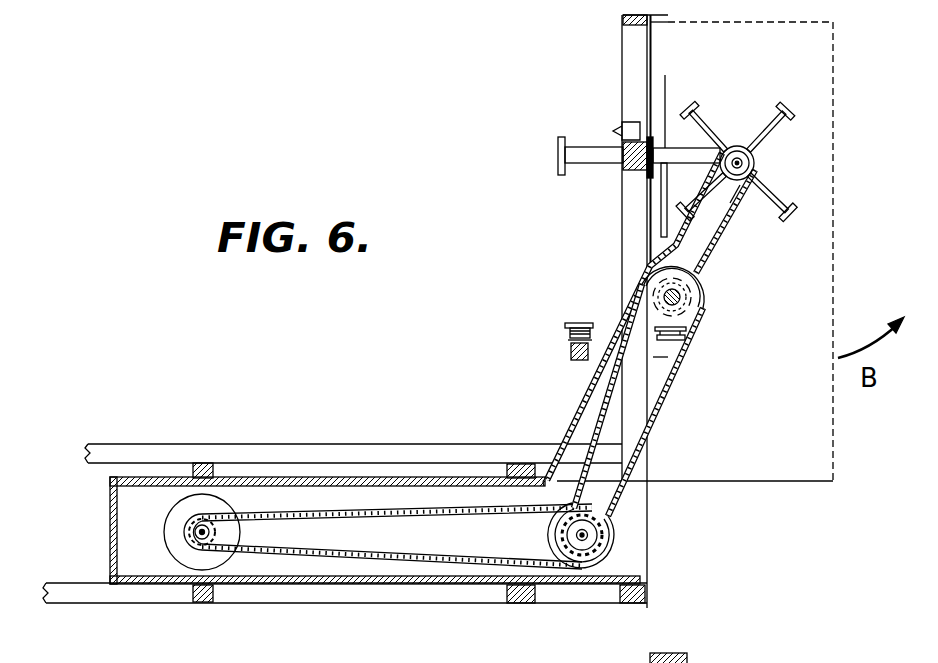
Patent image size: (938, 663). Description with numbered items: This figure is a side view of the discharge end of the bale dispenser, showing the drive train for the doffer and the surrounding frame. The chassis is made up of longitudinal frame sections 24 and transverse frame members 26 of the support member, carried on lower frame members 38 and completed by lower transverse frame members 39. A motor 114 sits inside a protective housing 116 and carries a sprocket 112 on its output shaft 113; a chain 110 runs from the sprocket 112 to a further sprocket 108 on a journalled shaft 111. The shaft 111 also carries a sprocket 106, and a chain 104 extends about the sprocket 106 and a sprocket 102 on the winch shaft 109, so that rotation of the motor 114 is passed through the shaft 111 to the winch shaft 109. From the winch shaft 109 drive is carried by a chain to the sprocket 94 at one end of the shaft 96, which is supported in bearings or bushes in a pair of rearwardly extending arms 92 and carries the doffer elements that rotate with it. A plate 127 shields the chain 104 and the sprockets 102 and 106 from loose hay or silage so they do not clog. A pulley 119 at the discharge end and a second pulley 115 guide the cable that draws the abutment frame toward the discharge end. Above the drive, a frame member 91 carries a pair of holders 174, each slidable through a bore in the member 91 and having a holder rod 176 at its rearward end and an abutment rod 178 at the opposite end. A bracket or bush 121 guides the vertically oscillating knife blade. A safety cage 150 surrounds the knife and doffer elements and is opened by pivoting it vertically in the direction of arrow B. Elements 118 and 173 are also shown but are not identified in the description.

The longitudinal frame sections 24 is at (113, 445).
The transverse frame members 26 is at (203, 465).
The lower frame members 38 is at (313, 596).
The lower transverse frame members 39 is at (208, 604).
The frame member 91 is at (628, 172).
The rearwardly extending arms 92 is at (672, 97).
The sprocket 94 is at (744, 200).
The shaft 96 is at (738, 146).
The sprocket 102 is at (700, 323).
The chain 104 is at (663, 414).
The sprocket 106 is at (605, 528).
The further sprocket 108 is at (612, 568).
The winch shaft 109 is at (683, 297).
The chain 110 is at (708, 266).
The journalled shaft 111 is at (582, 541).
The sprocket 112 is at (235, 528).
The output shaft 113 is at (200, 540).
The motor 114 is at (175, 532).
The second pulley 115 is at (688, 338).
The housing 116 is at (310, 483).
The lower chain run 118 is at (415, 562).
The pulley 119 is at (565, 326).
The bracket or bush 121 is at (620, 662).
The plate 127 is at (560, 416).
The safety cage 150 is at (839, 77).
The stop block 173 is at (617, 136).
The holders 174 is at (575, 147).
The holder rod 176 is at (659, 226).
The abutment rod 178 is at (557, 153).